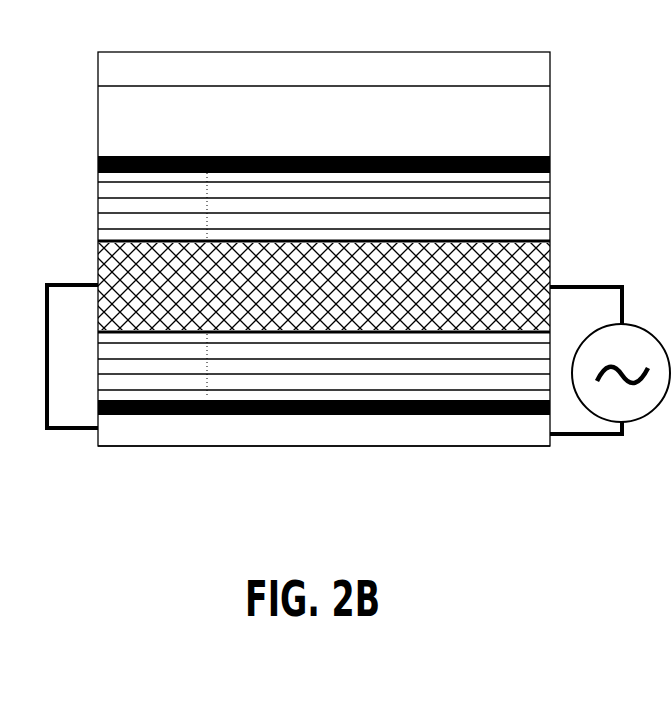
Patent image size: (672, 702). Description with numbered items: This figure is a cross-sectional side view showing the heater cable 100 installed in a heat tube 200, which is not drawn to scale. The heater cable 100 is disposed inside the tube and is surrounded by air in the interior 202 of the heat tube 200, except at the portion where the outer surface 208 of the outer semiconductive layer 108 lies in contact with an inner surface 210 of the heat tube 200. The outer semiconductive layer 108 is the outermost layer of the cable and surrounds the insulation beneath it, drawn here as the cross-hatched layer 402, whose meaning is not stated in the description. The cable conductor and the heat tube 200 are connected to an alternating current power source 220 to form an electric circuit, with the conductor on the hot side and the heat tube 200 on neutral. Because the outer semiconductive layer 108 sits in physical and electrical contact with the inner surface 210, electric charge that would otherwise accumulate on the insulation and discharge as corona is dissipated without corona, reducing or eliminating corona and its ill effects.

The heater cable 100 is at (567, 173).
The outer semiconductive layer 108 is at (98, 157).
The heat tube 200 is at (518, 447).
The interior of the heat tube 202 is at (175, 130).
The outer surface of the outer semiconductive layer 208 is at (520, 153).
The inner surface of the heat tube 210 is at (347, 88).
The alternating current power source 220 is at (661, 410).
The electrochromic active layer 402 is at (100, 266).